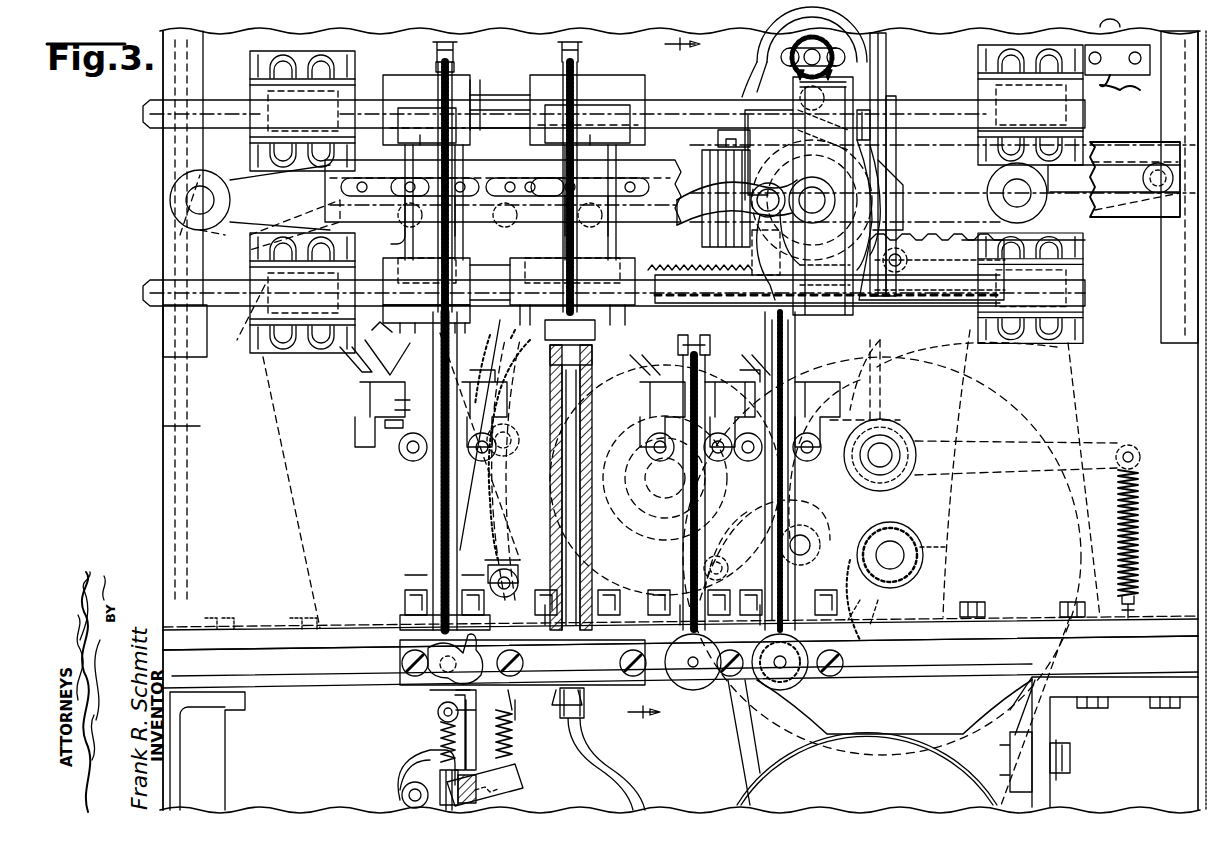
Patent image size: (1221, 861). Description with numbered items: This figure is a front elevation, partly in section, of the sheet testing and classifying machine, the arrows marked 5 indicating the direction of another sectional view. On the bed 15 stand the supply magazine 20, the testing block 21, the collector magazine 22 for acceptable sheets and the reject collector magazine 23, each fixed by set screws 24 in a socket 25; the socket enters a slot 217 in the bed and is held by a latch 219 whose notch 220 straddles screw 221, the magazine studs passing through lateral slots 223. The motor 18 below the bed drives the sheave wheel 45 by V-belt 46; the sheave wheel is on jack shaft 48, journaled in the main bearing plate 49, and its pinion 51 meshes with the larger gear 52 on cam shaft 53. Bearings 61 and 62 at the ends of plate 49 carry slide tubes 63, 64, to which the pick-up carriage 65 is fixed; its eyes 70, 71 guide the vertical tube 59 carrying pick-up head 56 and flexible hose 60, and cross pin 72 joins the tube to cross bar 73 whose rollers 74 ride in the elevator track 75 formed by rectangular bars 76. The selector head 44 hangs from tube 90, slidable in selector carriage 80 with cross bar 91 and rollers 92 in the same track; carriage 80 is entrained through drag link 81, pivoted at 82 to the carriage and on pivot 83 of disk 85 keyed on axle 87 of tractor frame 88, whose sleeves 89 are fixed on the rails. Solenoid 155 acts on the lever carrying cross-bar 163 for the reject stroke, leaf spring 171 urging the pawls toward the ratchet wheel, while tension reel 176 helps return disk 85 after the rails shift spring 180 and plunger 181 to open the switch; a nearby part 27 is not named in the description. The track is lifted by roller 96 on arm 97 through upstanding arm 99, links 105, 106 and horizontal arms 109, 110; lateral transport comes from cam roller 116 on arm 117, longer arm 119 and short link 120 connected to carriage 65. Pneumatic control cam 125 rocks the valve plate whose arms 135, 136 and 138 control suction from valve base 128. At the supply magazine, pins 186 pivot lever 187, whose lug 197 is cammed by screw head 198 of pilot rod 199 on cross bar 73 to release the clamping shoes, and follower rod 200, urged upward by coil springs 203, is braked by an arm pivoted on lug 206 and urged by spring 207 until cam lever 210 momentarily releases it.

The section line 5 is at (656, 379).
The bed plate 15 is at (275, 680).
The operating motor 18 is at (740, 785).
The supply magazine 20 is at (430, 490).
The testing block 21 is at (580, 463).
The collector magazine 22 is at (683, 540).
The reject collector magazine 23 is at (815, 410).
The set screws 24 is at (405, 603).
The socket 25 is at (405, 621).
The roller 27 is at (702, 570).
The selector head 44 is at (590, 335).
The sheave wheel 45 is at (1007, 405).
The V-belt 46 is at (740, 732).
The jack shaft 48 is at (904, 563).
The main upstanding bearing plate 49 is at (200, 426).
The pinion 51 is at (950, 547).
The larger gear 52 is at (875, 600).
The cam shaft 53 is at (665, 470).
The pick-up head 56 is at (410, 365).
The vertical tube 59 is at (436, 66).
The flexible hose 60 is at (436, 40).
The bearings 61 is at (255, 84).
The bearings 62 is at (980, 76).
The slide tube 63 is at (225, 128).
The slide tube 64 is at (150, 308).
The pick-up carriage 65 is at (478, 82).
The eye 70 is at (470, 120).
The eye 71 is at (380, 316).
The cross pin 72 is at (466, 182).
The cross bar 73 is at (425, 146).
The rollers 74 is at (370, 180).
The elevator track 75 is at (355, 190).
The rectangular bars 76 is at (1120, 152).
The selector carriage 80 is at (643, 245).
The drag link 81 is at (726, 198).
The pivot 82 is at (590, 258).
The pivot 83 is at (812, 178).
The disk 85 is at (858, 160).
The axle 87 is at (812, 220).
The tractor frame 88 is at (886, 137).
The sleeves 89 is at (887, 78).
The selector head tube 90 is at (580, 70).
The cross bar 91 is at (553, 180).
The rollers 92 is at (505, 180).
The roller 96 is at (722, 547).
The arm 97 is at (752, 525).
The upstanding arm 99 is at (953, 375).
The upstanding link 105 is at (165, 240).
The upstanding link 106 is at (1085, 256).
The horizontal arm 109 is at (230, 182).
The horizontal arm 110 is at (1070, 208).
The cam roller 116 is at (548, 410).
The arm 117 is at (530, 500).
The longer arm 119 is at (512, 338).
The short link 120 is at (480, 265).
The pneumatic control cam 125 is at (612, 395).
The valve base 128 is at (905, 193).
The upstanding arm 135 is at (905, 395).
The downwardly directed arm 136 is at (880, 528).
The outstanding arm 138 is at (1117, 441).
The solenoid 155 is at (716, 148).
The cross-bar 163 is at (800, 125).
The leaf spring 171 is at (932, 238).
The tension reel 176 is at (775, 42).
The spring 180 is at (1145, 88).
The plunger 181 is at (1130, 75).
The transverse pins 186 is at (398, 443).
The upstanding lever 187 is at (395, 410).
The extension lug 197 is at (395, 415).
The screw head 198 is at (388, 370).
The pilot rod 199 is at (405, 258).
The rod 200 is at (460, 803).
The coil springs 203 is at (440, 734).
The lug 206 is at (398, 775).
The coil spring 207 is at (508, 762).
The cam lever 210 is at (512, 742).
The slot 217 is at (425, 655).
The latch 219 is at (432, 702).
The notch 220 is at (512, 690).
The screw 221 is at (524, 662).
The lateral slots 223 is at (432, 590).